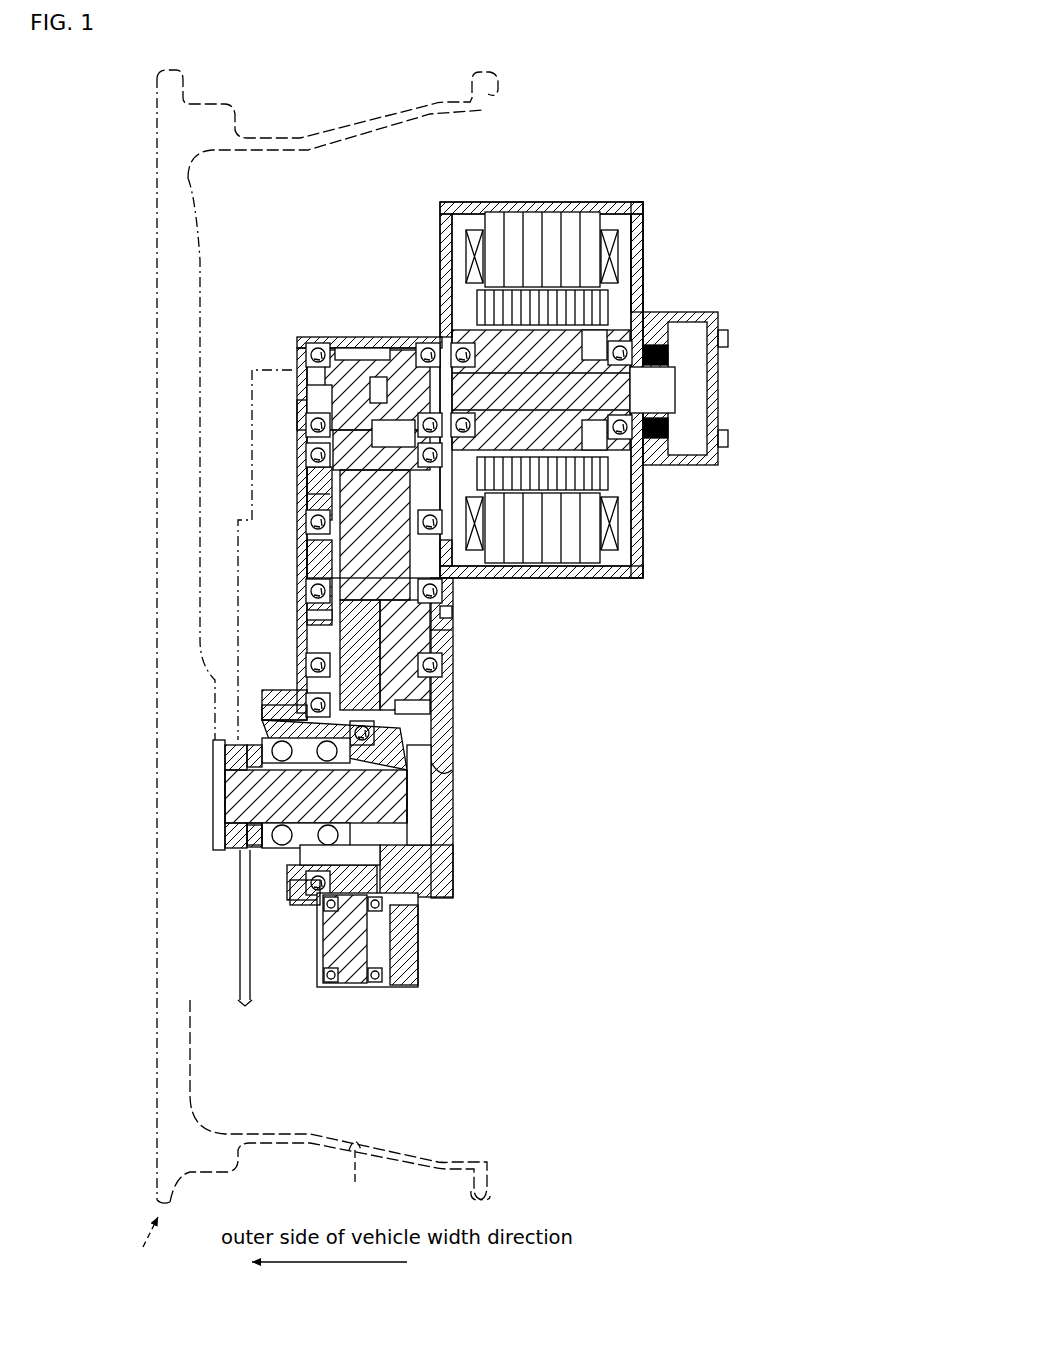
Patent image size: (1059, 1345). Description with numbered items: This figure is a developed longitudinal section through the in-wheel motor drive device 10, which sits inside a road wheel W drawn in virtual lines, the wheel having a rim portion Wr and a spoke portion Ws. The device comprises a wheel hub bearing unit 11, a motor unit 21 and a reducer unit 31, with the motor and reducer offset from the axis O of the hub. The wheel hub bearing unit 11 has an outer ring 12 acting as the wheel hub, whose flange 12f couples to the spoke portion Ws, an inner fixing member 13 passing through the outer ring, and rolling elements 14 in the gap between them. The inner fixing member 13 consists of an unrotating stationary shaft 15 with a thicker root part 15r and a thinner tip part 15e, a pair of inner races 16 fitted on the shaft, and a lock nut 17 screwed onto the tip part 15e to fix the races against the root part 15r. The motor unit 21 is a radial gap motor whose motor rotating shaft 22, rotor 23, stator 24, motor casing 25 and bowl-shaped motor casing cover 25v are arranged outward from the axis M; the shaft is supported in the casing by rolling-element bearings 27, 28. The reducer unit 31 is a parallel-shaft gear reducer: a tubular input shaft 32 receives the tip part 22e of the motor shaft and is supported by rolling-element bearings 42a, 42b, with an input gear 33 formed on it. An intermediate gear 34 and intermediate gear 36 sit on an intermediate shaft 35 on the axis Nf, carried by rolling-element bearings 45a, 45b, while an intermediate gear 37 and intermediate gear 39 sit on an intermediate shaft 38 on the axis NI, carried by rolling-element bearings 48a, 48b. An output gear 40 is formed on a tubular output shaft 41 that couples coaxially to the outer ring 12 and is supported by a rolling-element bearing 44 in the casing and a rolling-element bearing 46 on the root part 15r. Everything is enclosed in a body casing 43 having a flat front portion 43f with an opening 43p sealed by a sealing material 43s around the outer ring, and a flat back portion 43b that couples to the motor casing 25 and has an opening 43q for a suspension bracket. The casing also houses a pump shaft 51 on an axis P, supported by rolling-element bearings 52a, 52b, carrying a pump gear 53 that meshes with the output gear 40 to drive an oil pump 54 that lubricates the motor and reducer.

The in-wheel motor drive device 10 is at (657, 190).
The wheel hub bearing unit 11 is at (208, 692).
The outer ring 12 is at (230, 840).
The flange 12f is at (240, 890).
The inner fixing member 13 is at (212, 776).
The rolling elements 14 is at (275, 842).
The stationary shaft 15 is at (412, 782).
The tip part 15e is at (225, 797).
The root part 15r is at (412, 808).
The inner races 16 is at (215, 745).
The lock nut 17 is at (240, 817).
The motor unit 21 is at (597, 198).
The motor rotating shaft 22 is at (590, 415).
The tip part 22e is at (388, 360).
The rotor 23 is at (600, 305).
The stator 24 is at (600, 220).
The motor casing 25 is at (527, 207).
The motor casing cover 25v is at (633, 262).
The rolling-element bearing 27 is at (527, 420).
The rolling-element bearing 28 is at (585, 440).
The reducer unit 31 is at (293, 392).
The input shaft 32 is at (310, 380).
The input gear 33 is at (340, 347).
The intermediate gear 34 is at (313, 437).
The intermediate shaft 35 is at (315, 485).
The intermediate gear 36 is at (477, 425).
The intermediate gear 37 is at (447, 647).
The intermediate shaft 38 is at (310, 635).
The intermediate gear 39 is at (337, 577).
The output gear 40 is at (410, 708).
The output shaft 41 is at (275, 735).
The rolling-element bearing 42a is at (312, 343).
The rolling-element bearing 42b is at (428, 343).
The body casing 43 is at (297, 345).
The back portion 43b is at (452, 690).
The front portion 43f is at (300, 412).
The opening 43p is at (292, 720).
The opening 43q is at (448, 767).
The sealing material 43s is at (290, 900).
The rolling-element bearing 44 is at (310, 900).
The rolling-element bearing 45a is at (320, 537).
The rolling-element bearing 45b is at (445, 585).
The rolling-element bearing 46 is at (380, 853).
The rolling-element bearing 48a is at (330, 597).
The rolling-element bearing 48b is at (442, 612).
The pump shaft 51 is at (322, 885).
The rolling-element bearing 52a is at (333, 943).
The rolling-element bearing 52b is at (377, 973).
The pump gear 53 is at (352, 968).
The oil pump 54 is at (398, 953).
The axis M is at (733, 389).
The axis Nf is at (312, 494).
The axis NI is at (475, 629).
The axis O is at (475, 796).
The axis P is at (361, 956).
The road wheel W is at (143, 1248).
The rim portion Wr is at (355, 1174).
The spoke portion Ws is at (185, 589).